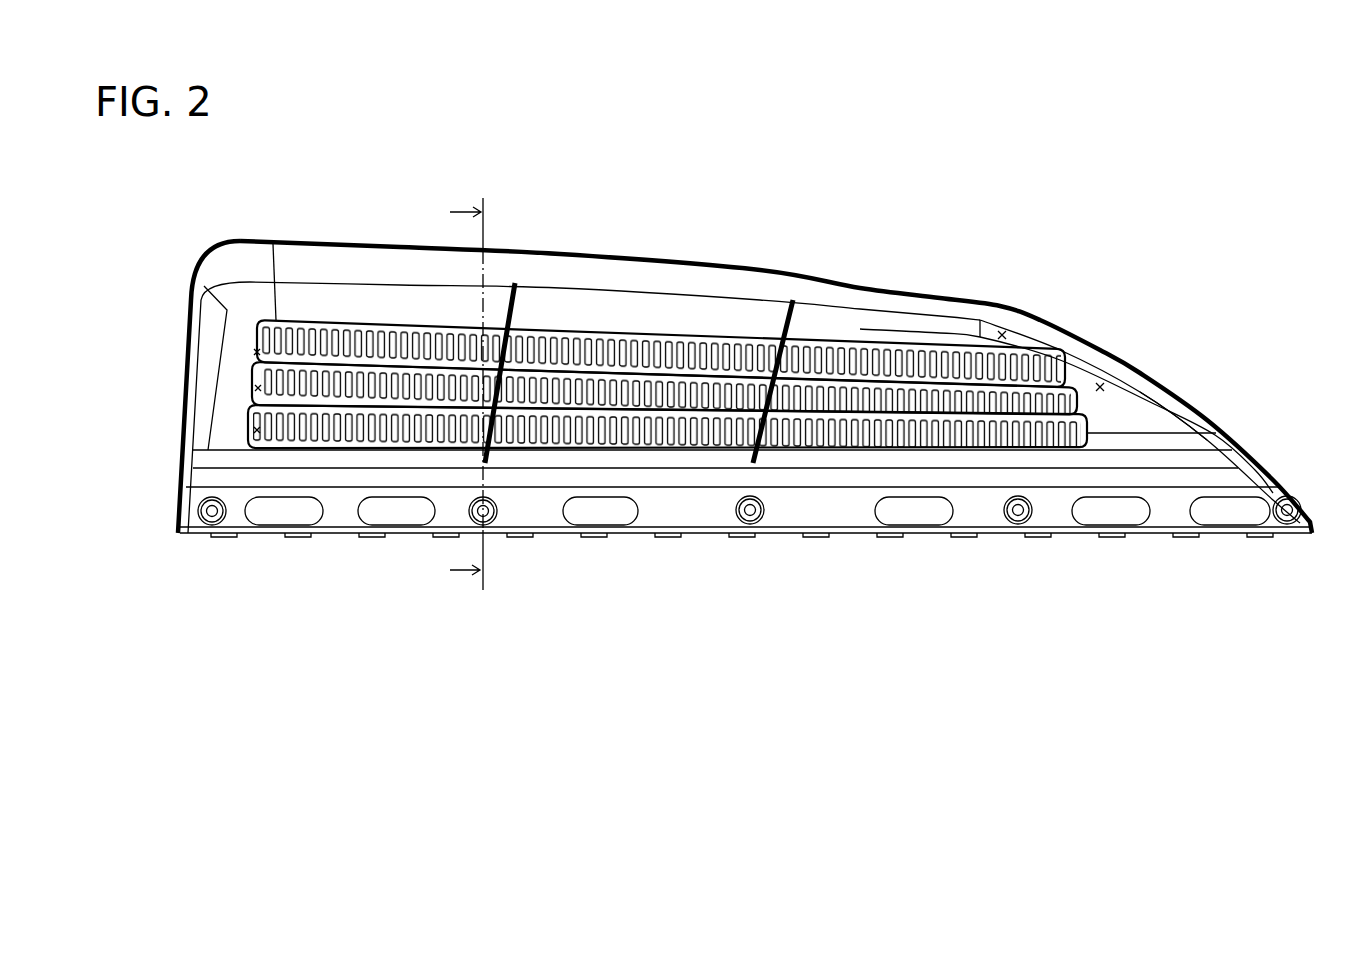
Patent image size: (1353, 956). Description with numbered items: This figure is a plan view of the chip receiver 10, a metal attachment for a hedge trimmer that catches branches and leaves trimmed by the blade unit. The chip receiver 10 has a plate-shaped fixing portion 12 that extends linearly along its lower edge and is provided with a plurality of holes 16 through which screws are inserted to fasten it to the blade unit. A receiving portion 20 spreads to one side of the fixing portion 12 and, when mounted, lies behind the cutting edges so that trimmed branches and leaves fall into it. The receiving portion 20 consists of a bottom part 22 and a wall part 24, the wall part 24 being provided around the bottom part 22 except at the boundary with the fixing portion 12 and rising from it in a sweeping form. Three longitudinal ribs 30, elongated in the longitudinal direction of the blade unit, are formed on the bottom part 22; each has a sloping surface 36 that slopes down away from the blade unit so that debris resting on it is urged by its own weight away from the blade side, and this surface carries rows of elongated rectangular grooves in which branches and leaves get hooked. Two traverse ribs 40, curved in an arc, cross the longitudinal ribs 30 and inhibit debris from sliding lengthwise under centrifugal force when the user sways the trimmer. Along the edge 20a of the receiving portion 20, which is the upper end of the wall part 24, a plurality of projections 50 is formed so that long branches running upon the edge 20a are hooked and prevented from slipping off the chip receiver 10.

The chip receiver 10 is at (1260, 171).
The fixing portion 12 is at (1160, 515).
The holes 16 is at (1263, 583).
The receiving portion 20 is at (1190, 227).
The edge of the receiving portion 20a is at (1183, 386).
The bottom part 22 is at (1103, 387).
The wall part 24 is at (1006, 335).
The longitudinal ribs 30 is at (234, 424).
The sloping surface 36 is at (259, 430).
The traverse ribs 40 is at (795, 321).
The projections 50 is at (889, 288).